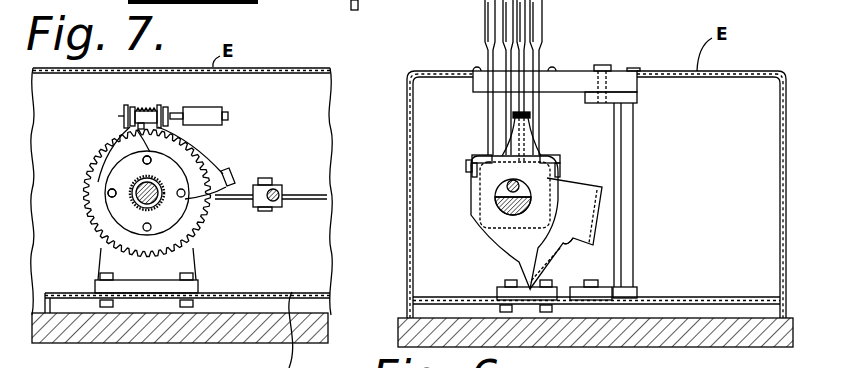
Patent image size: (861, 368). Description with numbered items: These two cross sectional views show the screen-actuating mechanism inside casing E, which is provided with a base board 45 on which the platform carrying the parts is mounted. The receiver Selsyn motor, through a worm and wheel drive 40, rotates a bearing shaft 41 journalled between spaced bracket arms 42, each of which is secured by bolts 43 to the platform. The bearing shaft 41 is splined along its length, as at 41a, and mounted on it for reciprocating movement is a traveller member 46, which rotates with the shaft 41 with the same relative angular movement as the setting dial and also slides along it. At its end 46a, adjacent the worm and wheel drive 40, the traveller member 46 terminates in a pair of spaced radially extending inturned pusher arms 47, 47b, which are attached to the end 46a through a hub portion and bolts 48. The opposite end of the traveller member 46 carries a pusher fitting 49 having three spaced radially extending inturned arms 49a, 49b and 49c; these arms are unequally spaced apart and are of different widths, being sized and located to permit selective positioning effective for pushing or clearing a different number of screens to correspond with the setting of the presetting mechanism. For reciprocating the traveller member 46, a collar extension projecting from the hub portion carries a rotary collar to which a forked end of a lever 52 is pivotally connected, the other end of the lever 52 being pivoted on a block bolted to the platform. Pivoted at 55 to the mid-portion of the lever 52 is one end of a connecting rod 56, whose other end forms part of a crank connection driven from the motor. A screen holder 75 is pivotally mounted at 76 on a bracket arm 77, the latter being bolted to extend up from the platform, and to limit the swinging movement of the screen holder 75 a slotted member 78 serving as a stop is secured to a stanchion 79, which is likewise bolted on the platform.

In FIG. 7, the worm and wheel drive 40 is at (150, 112).
In FIG. 7, the bearing shaft 41 is at (197, 215).
In FIG. 6, the bearing shaft 41 is at (508, 214).
In FIG. 6, the spline 41a is at (497, 199).
In FIG. 7, the bracket arms 42 is at (183, 264).
In FIG. 7, the bolts 43 is at (183, 280).
In FIG. 6, the bolts 43 is at (707, 297).
In FIG. 7, the base board 45 is at (224, 332).
In FIG. 6, the base board 45 is at (631, 338).
In FIG. 7, the traveller member 46 is at (158, 182).
In FIG. 7, the end of traveller member 46a is at (112, 210).
In FIG. 7, the pusher arm 47 is at (137, 130).
In FIG. 7, the pusher arm 47b is at (278, 175).
In FIG. 7, the bolts 48 is at (143, 160).
In FIG. 6, the pusher fitting 49 is at (473, 188).
In FIG. 6, the inturned arm 49a is at (528, 127).
In FIG. 6, the inturned arm 49b is at (579, 186).
In FIG. 6, the inturned arm 49c is at (567, 255).
In FIG. 7, the lever 52 is at (306, 182).
In FIG. 7, the pivot 55 is at (272, 181).
In FIG. 7, the connecting rod 56 is at (281, 208).
In FIG. 6, the screen holder 75 is at (507, 107).
In FIG. 6, the pivot 76 is at (468, 165).
In FIG. 6, the bracket arm 77 is at (520, 263).
In FIG. 6, the slotted member 78 is at (571, 74).
In FIG. 6, the stanchion 79 is at (630, 151).